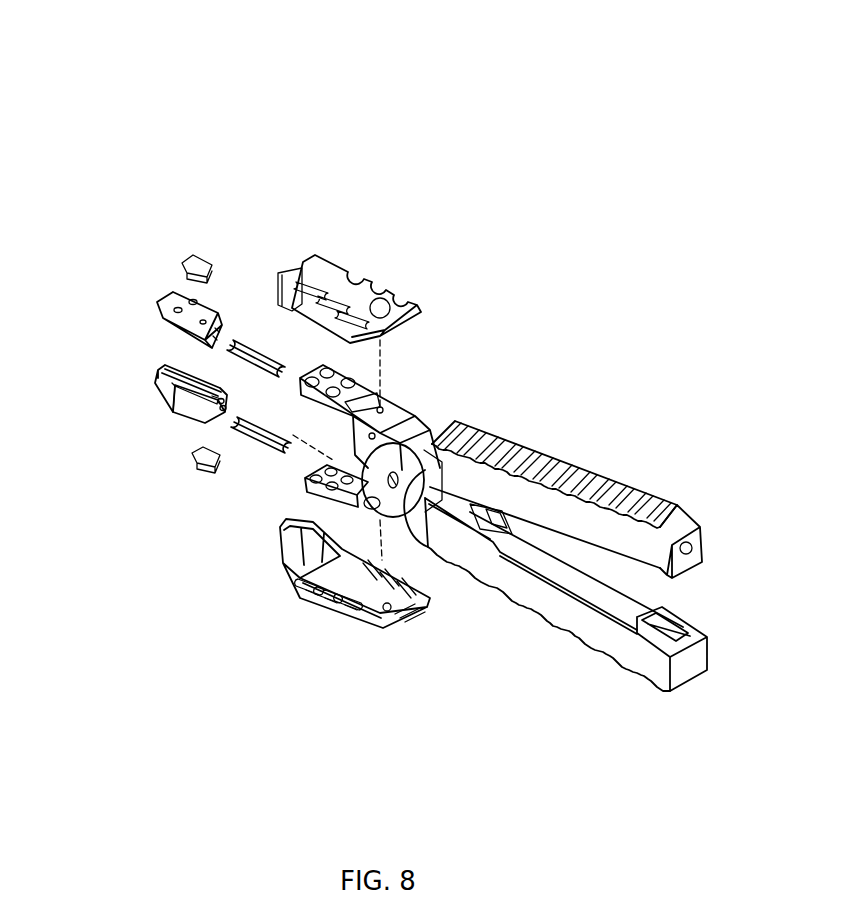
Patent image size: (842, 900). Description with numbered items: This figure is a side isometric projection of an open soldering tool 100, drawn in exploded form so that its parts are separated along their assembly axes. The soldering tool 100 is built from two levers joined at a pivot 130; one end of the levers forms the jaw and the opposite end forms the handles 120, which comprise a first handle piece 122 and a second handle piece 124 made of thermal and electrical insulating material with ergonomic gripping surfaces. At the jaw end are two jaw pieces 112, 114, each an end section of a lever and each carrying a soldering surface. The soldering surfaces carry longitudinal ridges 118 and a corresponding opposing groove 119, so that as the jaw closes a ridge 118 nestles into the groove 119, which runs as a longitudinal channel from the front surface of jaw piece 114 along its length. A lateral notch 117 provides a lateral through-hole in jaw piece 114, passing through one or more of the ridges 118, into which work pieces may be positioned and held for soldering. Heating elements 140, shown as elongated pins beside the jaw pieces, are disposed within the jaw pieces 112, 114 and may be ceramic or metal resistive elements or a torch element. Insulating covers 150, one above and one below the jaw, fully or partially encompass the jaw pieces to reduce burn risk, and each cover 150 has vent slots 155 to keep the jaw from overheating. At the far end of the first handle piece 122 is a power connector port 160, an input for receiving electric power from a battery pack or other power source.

The soldering tool 100 is at (693, 72).
The jaw piece 112 is at (134, 227).
The jaw piece 114 is at (131, 424).
The lateral notch 117 is at (131, 373).
The longitudinal ridge 118 is at (129, 295).
The groove 119 is at (128, 483).
The handles 120 is at (574, 504).
The first handle piece 122 is at (587, 458).
The second handle piece 124 is at (555, 622).
The pivot 130 is at (415, 416).
The heating element 140 is at (233, 390).
The insulating cover 150 is at (270, 471).
The vent slots 155 is at (423, 481).
The power connector port 160 is at (696, 493).